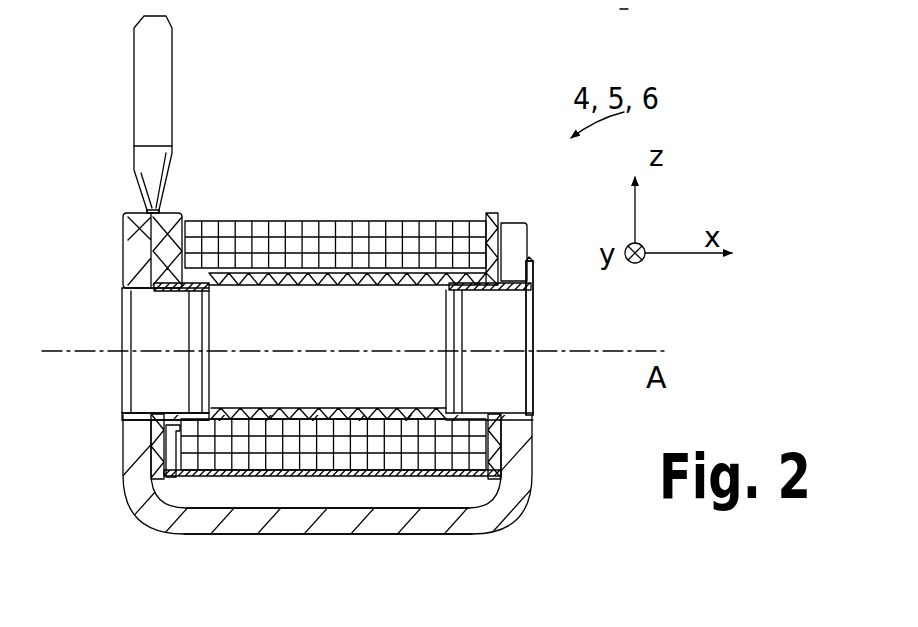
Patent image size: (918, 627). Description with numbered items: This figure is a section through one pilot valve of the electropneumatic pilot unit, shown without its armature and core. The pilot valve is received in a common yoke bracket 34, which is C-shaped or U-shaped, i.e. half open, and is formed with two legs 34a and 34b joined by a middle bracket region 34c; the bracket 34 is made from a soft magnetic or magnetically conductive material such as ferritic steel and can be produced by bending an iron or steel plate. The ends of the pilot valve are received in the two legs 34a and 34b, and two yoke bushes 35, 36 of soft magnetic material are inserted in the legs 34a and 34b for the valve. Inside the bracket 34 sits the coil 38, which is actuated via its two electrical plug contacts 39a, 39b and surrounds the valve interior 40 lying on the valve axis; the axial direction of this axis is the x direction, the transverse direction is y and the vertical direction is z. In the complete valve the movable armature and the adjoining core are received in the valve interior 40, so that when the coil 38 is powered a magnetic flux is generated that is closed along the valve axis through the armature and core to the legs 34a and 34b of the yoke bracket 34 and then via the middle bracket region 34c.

The yoke bracket 34 is at (507, 503).
The leg 34a is at (138, 266).
The leg 34b is at (500, 248).
The middle bracket region 34c is at (310, 522).
The yoke bush 35 is at (508, 424).
The yoke bush 36 is at (135, 410).
The coil 38 is at (350, 222).
The electrical contact 39a is at (153, 67).
The electrical contact 39b is at (166, 185).
The valve interior 40 is at (402, 320).